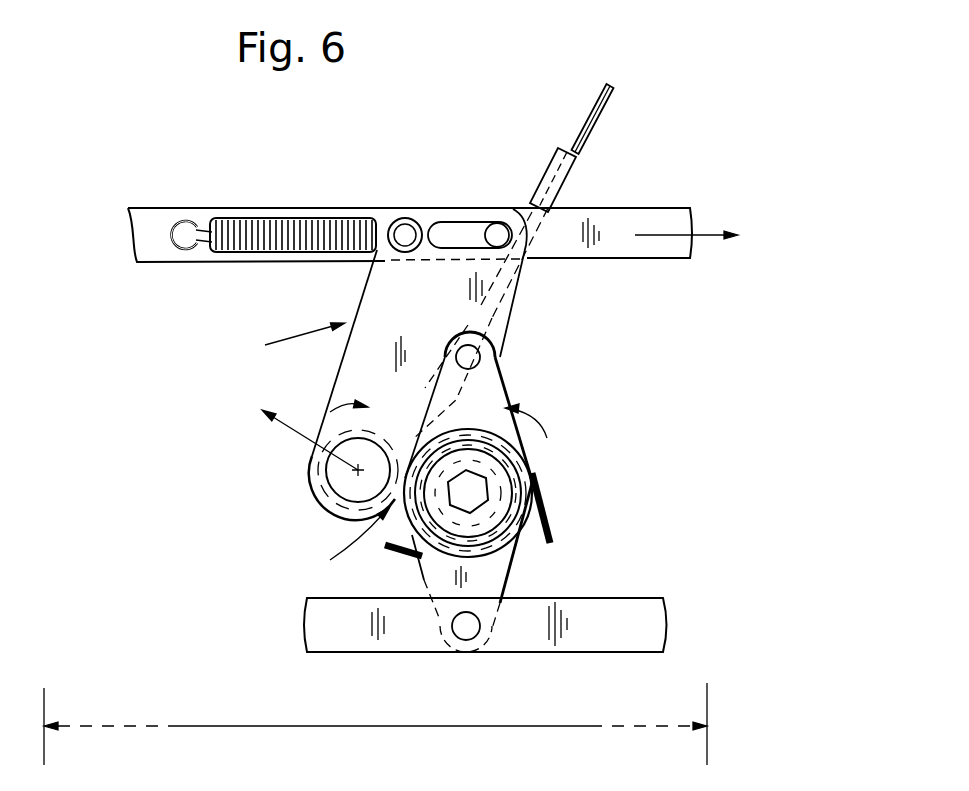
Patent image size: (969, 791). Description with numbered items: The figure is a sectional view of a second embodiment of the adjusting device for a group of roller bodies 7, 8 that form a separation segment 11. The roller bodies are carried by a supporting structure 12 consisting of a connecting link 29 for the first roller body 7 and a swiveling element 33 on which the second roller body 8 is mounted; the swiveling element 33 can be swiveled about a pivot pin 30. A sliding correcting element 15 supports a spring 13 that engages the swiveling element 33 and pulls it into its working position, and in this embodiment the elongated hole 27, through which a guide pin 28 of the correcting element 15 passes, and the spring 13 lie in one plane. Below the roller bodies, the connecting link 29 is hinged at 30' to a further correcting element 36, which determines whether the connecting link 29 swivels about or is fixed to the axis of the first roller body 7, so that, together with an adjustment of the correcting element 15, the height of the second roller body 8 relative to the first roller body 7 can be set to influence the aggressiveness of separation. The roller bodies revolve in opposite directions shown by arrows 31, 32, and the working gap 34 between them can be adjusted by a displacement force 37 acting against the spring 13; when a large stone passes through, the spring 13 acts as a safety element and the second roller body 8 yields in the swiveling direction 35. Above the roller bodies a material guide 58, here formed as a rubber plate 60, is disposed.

The first roller body 7 is at (505, 470).
The second roller body 8 is at (325, 477).
The separation segment 11 is at (257, 726).
The supporting structure 12 is at (288, 347).
The spring 13 is at (297, 213).
The correcting element 15 is at (632, 220).
The elongated hole 27 is at (450, 222).
The guide pin 28 is at (497, 232).
The connecting link 29 is at (497, 573).
The pivot pin 30 is at (517, 347).
The hinge point 30' is at (427, 665).
The arrow 31 is at (533, 420).
The arrow 32 is at (332, 410).
The swiveling element 33 is at (441, 316).
The working gap 34 is at (355, 547).
The swiveling direction 35 is at (283, 423).
The further correcting element 36 is at (577, 638).
The displacement force 37 is at (710, 240).
The material guide 58 is at (614, 108).
The rubber plate 60 is at (555, 170).